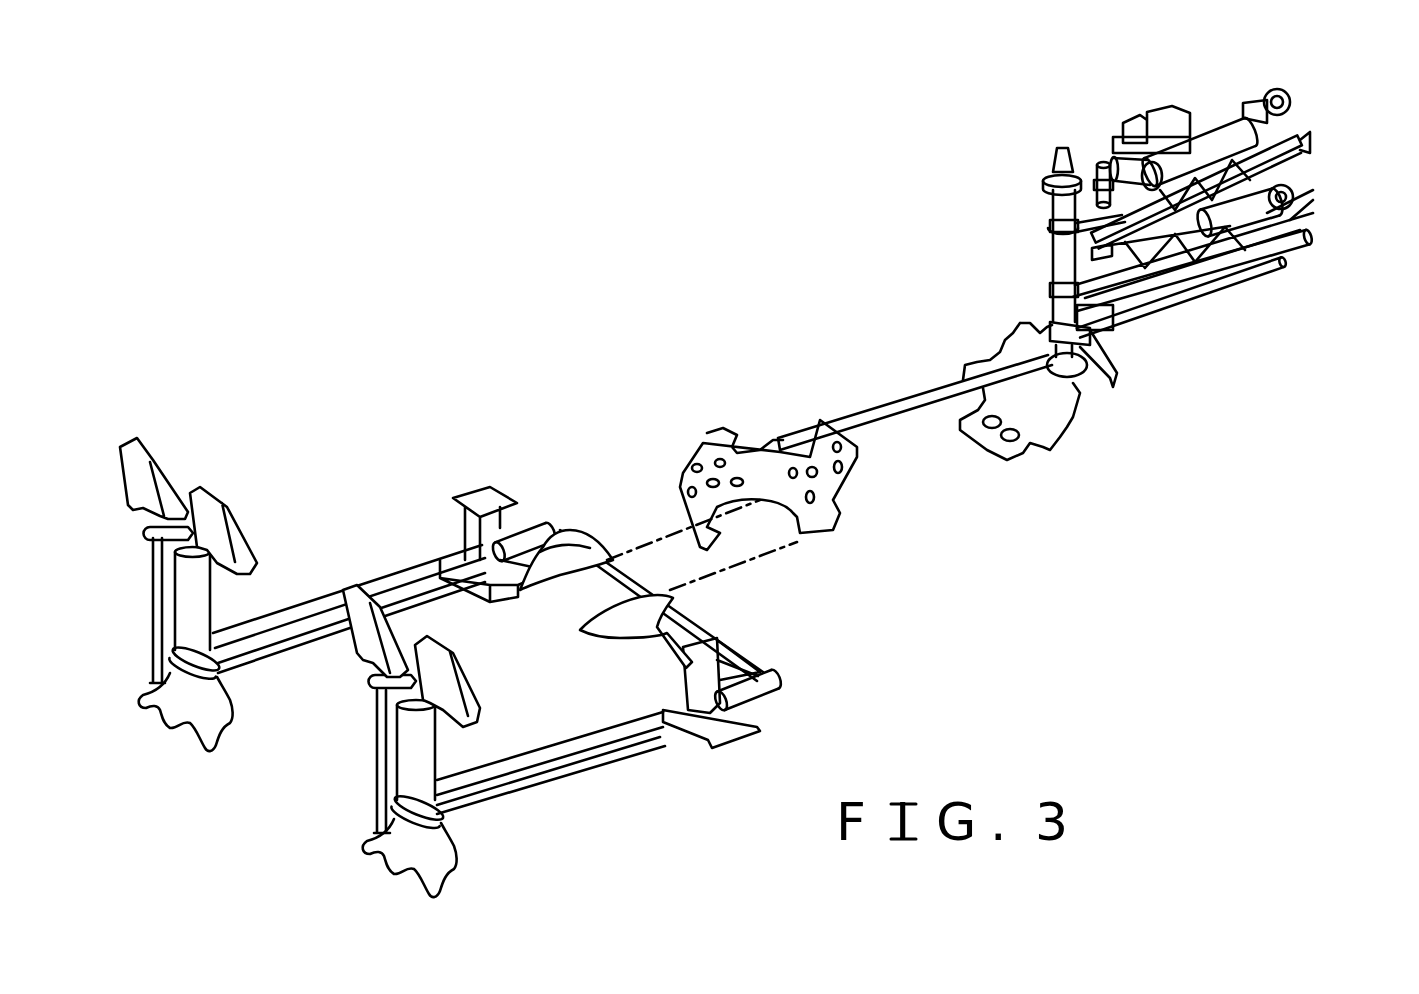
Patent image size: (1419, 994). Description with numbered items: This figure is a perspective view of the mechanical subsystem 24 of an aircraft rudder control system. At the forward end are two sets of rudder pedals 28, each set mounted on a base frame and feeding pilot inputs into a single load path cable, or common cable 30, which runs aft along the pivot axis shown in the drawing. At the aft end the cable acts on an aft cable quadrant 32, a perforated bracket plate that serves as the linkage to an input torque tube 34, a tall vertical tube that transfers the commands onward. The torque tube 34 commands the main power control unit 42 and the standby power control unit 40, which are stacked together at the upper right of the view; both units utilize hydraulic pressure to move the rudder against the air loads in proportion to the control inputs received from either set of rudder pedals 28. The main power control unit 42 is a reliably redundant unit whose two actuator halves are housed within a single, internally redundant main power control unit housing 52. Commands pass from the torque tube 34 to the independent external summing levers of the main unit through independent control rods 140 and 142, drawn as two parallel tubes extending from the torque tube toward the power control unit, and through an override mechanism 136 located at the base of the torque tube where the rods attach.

The mechanical subsystem 24 is at (863, 465).
The rudder pedals 28 is at (354, 672).
The single load path cable 30 is at (736, 580).
The aft cable quadrant 32 is at (844, 514).
The input torque tube 34 is at (1077, 133).
The standby power control unit 40 is at (1241, 163).
The main power control unit 42 is at (1241, 291).
The main power control unit housing 52 is at (1298, 202).
The override mechanism 136 is at (1135, 352).
The control rod 140 is at (1300, 247).
The control rod 142 is at (1280, 260).